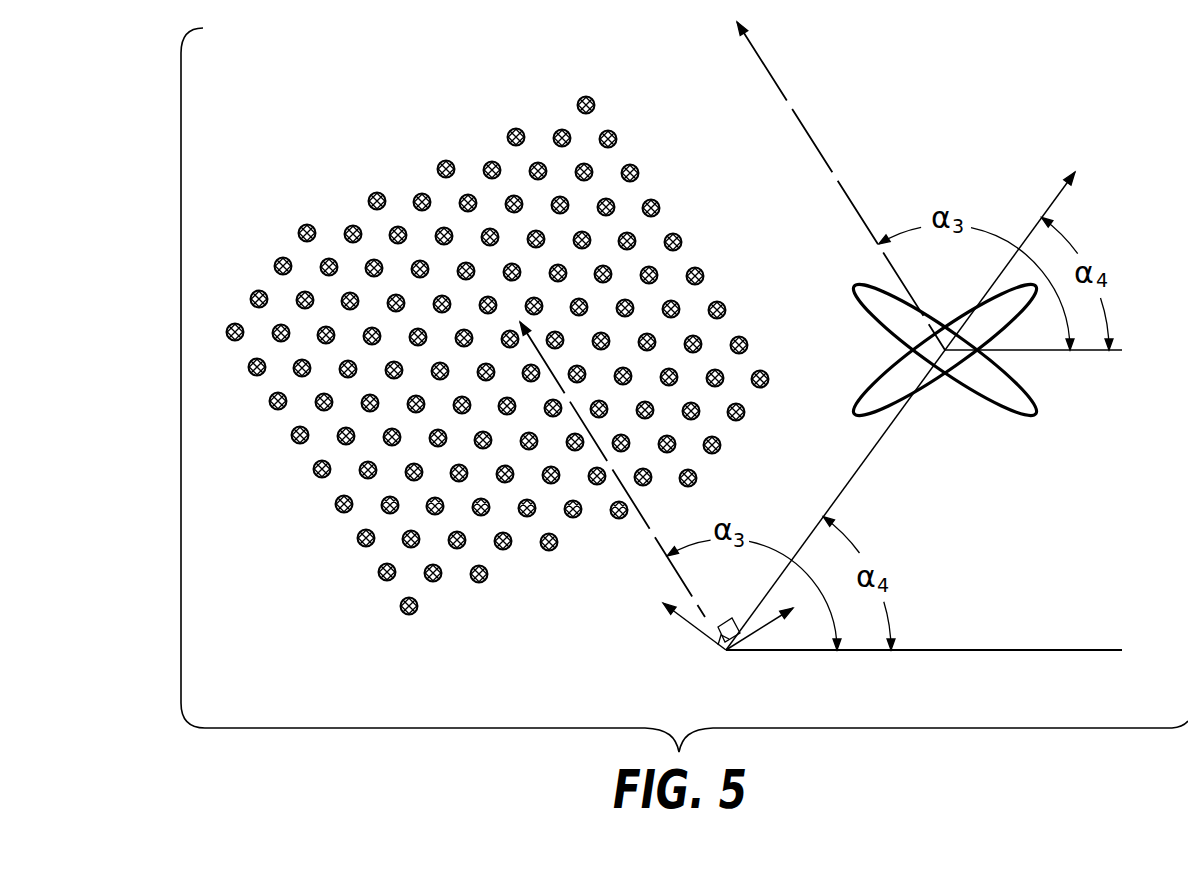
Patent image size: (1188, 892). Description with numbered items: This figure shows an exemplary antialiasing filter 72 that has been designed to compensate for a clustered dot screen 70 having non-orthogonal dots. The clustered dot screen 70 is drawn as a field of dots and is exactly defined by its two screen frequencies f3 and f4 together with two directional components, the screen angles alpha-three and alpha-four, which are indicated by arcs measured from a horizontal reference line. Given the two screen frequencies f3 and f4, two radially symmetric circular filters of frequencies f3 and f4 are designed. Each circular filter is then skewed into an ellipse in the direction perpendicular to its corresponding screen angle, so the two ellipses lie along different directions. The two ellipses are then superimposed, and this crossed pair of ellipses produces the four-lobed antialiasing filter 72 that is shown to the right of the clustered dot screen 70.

The clustered dot screen 70 is at (378, 134).
The antialiasing filter 72 is at (1046, 387).
The screen frequency f3 is at (755, 633).
The screen frequency f4 is at (702, 635).